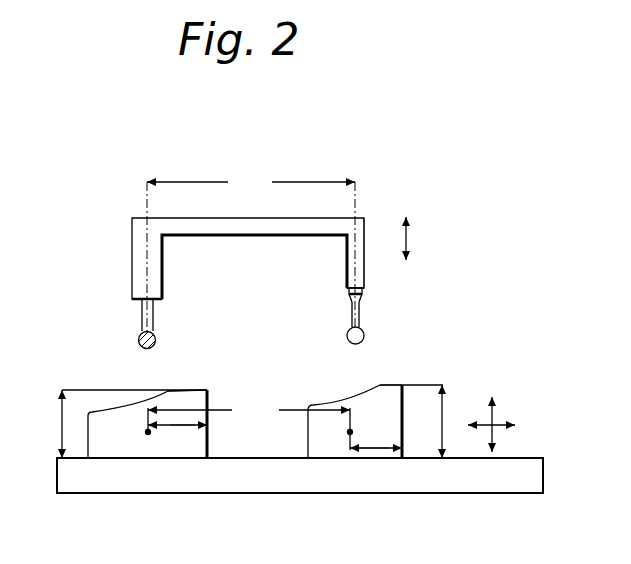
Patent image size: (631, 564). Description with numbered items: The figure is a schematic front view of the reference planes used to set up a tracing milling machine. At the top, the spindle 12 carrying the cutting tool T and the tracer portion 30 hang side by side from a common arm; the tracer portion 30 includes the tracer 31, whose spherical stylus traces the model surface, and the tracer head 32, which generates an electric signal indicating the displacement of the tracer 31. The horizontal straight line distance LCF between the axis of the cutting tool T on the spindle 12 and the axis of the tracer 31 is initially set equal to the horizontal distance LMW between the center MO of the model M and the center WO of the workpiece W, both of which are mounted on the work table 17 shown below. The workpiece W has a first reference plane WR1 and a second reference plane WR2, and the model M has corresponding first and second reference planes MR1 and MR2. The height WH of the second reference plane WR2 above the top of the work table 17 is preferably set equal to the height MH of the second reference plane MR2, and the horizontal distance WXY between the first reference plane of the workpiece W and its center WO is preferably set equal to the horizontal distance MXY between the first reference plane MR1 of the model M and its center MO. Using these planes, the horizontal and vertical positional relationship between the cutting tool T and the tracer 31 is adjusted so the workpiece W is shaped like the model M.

The spindle 12 is at (133, 272).
The tracer portion 30 is at (367, 243).
The tracer 31 is at (358, 318).
The tracer head 32 is at (364, 283).
The cutting tool T is at (157, 338).
The work table 17 is at (59, 468).
The horizontal straight line distance between cutting tool axis and tracer axis LCF is at (251, 178).
The workpiece W is at (106, 418).
The height of second reference plane of workpiece WH is at (62, 419).
The first reference plane of workpiece WR1 is at (208, 447).
The second reference plane of workpiece WR2 is at (187, 389).
The center of workpiece WO is at (170, 442).
The horizontal straight line distance between workpiece first reference plane and ce WXY is at (182, 426).
The horizontal straight line distance between model center and workpiece center LMW is at (249, 424).
The model M is at (355, 421).
The center of model MO is at (352, 430).
The height of second reference plane of model MH is at (442, 417).
The first reference plane of model MR1 is at (403, 452).
The second reference plane of model MR2 is at (396, 378).
The horizontal straight line distance between model first reference plane and center MXY is at (367, 450).